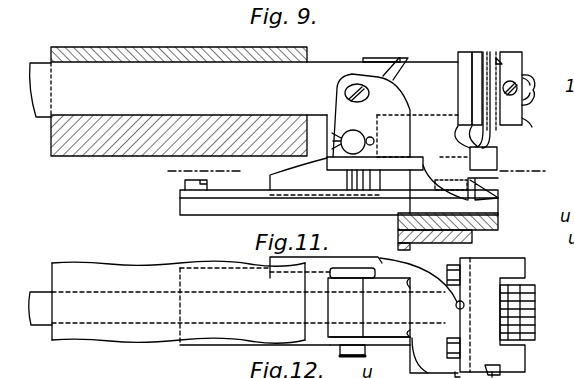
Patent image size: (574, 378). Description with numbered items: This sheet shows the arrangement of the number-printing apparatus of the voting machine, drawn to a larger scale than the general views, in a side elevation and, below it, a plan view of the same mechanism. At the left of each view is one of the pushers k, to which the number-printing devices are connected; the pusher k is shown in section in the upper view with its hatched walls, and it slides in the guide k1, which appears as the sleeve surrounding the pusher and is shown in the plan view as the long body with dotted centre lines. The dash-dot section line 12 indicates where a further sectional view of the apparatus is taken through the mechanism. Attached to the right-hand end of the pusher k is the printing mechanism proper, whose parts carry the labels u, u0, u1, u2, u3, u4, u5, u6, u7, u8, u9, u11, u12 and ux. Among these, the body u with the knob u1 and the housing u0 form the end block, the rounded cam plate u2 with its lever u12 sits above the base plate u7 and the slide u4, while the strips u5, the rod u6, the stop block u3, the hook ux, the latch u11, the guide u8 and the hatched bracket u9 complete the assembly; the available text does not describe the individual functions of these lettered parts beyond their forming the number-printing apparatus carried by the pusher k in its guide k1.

In FIG. 9, the pusher k is at (254, 101).
In FIG. 11, the pusher k is at (46, 330).
In FIG. 9, the guide k1 is at (36, 110).
In FIG. 11, the guide k1 is at (248, 303).
In FIG. 9, the section line 12 is at (356, 172).
In FIG. 9, the breech block u is at (458, 80).
In FIG. 11, the breech block u is at (465, 262).
In FIG. 9, the knurled knob u1 is at (536, 88).
In FIG. 11, the knurled knob u1 is at (528, 290).
In FIG. 9, the cam plate u2 is at (352, 138).
In FIG. 9, the stop block u3 is at (497, 153).
In FIG. 11, the stop block u3 is at (394, 349).
In FIG. 9, the cam slide u4 is at (346, 176).
In FIG. 11, the cam slide u4 is at (347, 266).
In FIG. 9, the spring u5 is at (425, 178).
In FIG. 9, the rod u6 is at (487, 54).
In FIG. 9, the base plate u7 is at (180, 208).
In FIG. 9, the guide u8 is at (386, 200).
In FIG. 9, the bracket u9 is at (498, 206).
In FIG. 9, the latch u11 is at (498, 185).
In FIG. 9, the lever u12 is at (405, 48).
In FIG. 11, the lever u12 is at (396, 297).
In FIG. 9, the housing u0 is at (500, 60).
In FIG. 11, the housing u0 is at (505, 365).
In FIG. 9, the hook ux is at (515, 128).
In FIG. 11, the hook ux is at (505, 372).